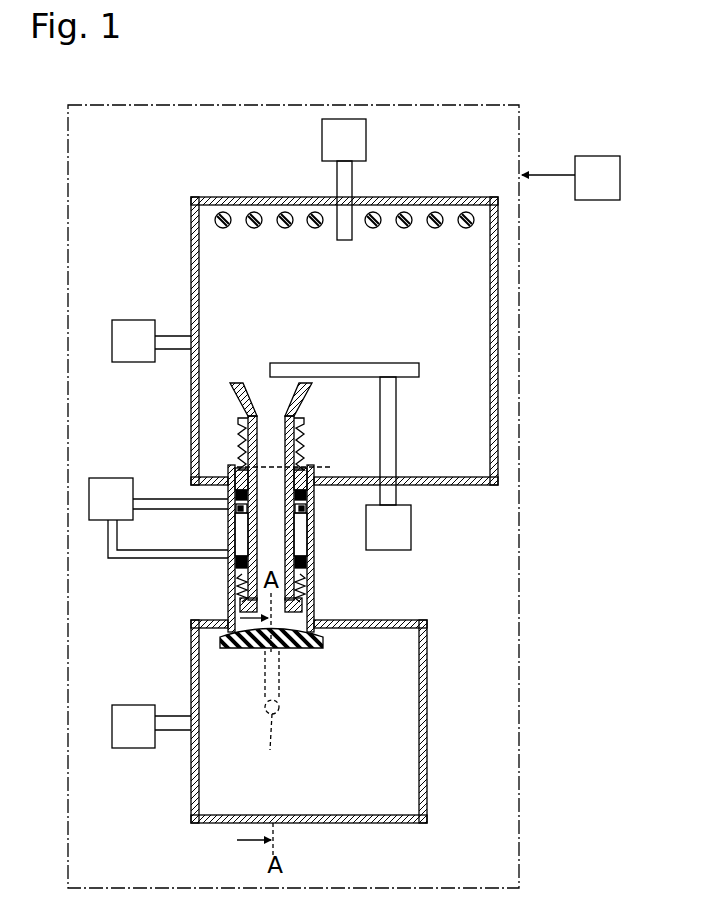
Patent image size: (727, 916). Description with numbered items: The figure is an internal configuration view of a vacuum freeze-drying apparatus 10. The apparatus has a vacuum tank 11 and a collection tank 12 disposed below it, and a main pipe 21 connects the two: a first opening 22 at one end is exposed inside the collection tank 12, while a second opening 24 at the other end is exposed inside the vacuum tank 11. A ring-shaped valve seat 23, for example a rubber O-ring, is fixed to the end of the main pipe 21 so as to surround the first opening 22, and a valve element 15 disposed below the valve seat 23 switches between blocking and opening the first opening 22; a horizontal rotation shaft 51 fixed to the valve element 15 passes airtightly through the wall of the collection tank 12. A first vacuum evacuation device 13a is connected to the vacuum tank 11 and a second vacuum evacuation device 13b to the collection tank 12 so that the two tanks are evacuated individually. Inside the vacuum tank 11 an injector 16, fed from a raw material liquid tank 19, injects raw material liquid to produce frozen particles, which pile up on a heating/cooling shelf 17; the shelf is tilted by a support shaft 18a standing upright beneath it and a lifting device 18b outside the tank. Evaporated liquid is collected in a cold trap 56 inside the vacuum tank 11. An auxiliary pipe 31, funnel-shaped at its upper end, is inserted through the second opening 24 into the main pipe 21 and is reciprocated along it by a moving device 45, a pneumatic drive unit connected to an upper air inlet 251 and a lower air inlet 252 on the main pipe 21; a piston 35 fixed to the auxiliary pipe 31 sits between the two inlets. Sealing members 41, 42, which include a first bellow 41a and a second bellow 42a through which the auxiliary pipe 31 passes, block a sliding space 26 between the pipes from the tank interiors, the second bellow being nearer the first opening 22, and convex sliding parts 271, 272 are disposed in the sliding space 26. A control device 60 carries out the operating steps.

The vacuum freeze-drying apparatus 10 is at (82, 89).
The vacuum tank 11 is at (191, 222).
The collection tank 12 is at (191, 660).
The first vacuum evacuation device 13a is at (140, 319).
The second vacuum evacuation device 13b is at (126, 749).
The valve element 15 is at (243, 652).
The injector 16 is at (344, 241).
The heating/cooling shelf 17 is at (386, 363).
The support shaft 18a is at (397, 428).
The lifting device 18b is at (411, 528).
The raw material liquid tank 19 is at (366, 133).
The main pipe 21 is at (228, 532).
The first opening 22 is at (299, 625).
The valve seat 23 is at (220, 638).
The second opening 24 is at (276, 461).
The upper air inlet 251 is at (236, 492).
The lower air inlet 252 is at (236, 556).
The sliding space 26 is at (302, 540).
The convex sliding part 271 is at (302, 492).
The convex sliding part 272 is at (304, 563).
The auxiliary pipe 31 is at (234, 404).
The piston 35 is at (304, 508).
The sealing member 41 is at (240, 454).
The first bellow 41a is at (216, 443).
The sealing member 42 is at (236, 586).
The second bellow 42a is at (197, 595).
The moving device 45 is at (96, 477).
The rotation shaft 51 is at (275, 741).
The cold trap 56 is at (223, 211).
The control device 60 is at (597, 201).